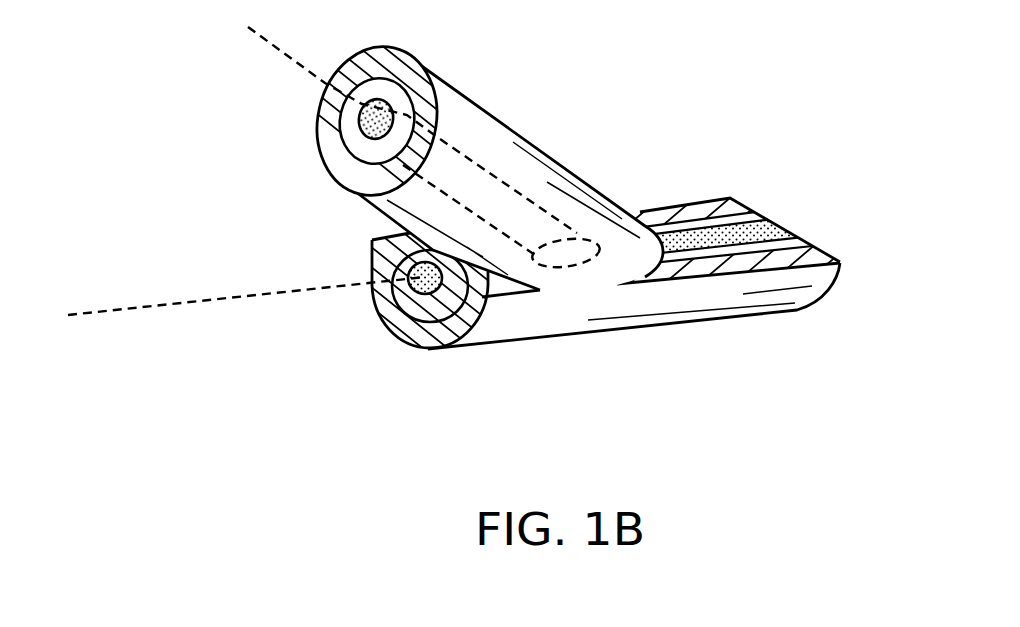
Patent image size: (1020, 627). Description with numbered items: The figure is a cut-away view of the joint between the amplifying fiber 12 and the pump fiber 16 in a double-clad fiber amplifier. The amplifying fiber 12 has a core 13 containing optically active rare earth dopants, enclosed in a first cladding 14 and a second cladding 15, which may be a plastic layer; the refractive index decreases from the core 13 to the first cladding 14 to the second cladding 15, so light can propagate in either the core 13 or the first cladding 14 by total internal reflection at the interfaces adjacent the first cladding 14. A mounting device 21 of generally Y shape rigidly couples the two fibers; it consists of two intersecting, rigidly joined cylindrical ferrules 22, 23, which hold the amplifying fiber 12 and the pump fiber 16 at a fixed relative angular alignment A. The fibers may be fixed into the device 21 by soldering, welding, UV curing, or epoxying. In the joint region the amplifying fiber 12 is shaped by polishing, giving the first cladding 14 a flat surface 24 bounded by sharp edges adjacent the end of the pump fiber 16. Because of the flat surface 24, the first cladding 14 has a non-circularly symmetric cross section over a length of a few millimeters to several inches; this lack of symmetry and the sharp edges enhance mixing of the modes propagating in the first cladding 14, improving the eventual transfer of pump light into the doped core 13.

The amplifying fiber 12 is at (561, 262).
The core 13 is at (420, 275).
The first cladding 14 is at (405, 320).
The second cladding 15 is at (435, 306).
The pump fiber 16 is at (354, 78).
The mounting device 21 is at (505, 145).
The cylindrical ferrule 22 is at (408, 64).
The cylindrical ferrule 23 is at (822, 280).
The flat surface 24 is at (770, 230).
The relative angular alignment A is at (276, 49).